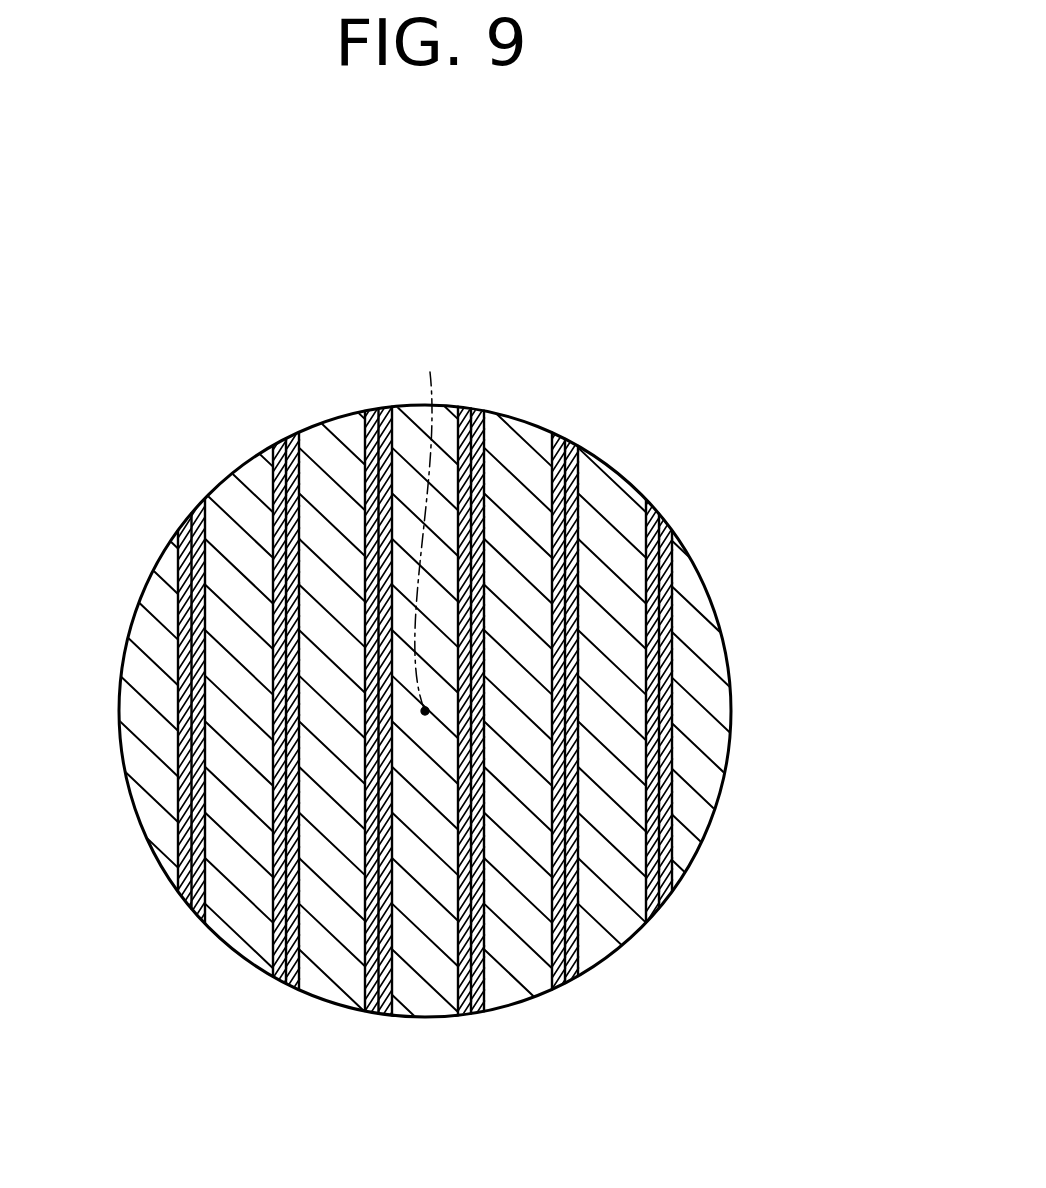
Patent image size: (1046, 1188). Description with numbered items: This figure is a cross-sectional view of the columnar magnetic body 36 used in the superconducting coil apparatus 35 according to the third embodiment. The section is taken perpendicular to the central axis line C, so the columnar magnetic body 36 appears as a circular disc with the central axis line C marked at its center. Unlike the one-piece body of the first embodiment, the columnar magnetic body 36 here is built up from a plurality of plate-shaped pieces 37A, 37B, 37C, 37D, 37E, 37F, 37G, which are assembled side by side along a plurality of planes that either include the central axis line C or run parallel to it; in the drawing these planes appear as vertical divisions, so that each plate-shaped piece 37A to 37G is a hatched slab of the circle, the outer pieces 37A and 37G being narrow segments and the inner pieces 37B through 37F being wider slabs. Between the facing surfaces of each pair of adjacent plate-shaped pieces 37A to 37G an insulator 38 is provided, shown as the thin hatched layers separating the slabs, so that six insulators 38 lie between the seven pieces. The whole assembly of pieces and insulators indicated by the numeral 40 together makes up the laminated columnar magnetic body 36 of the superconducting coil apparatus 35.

The superconducting coil apparatus 35 is at (785, 694).
The columnar magnetic body 36 is at (526, 403).
The plate-shaped piece 37A is at (155, 841).
The plate-shaped piece 37B is at (244, 944).
The plate-shaped piece 37C is at (333, 987).
The plate-shaped piece 37D is at (430, 1000).
The plate-shaped piece 37E is at (522, 976).
The plate-shaped piece 37F is at (612, 932).
The plate-shaped piece 37G is at (706, 800).
The insulator 38 is at (187, 518).
The optical element 40 is at (785, 478).
The central axis line C is at (425, 522).